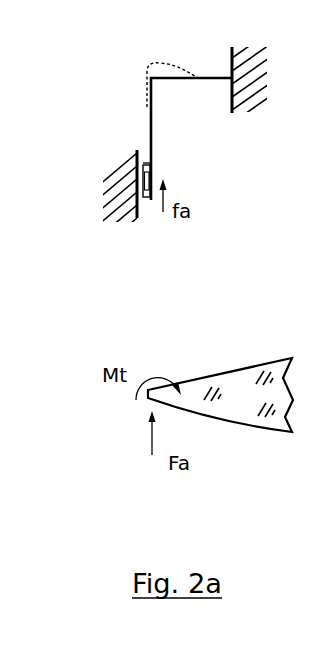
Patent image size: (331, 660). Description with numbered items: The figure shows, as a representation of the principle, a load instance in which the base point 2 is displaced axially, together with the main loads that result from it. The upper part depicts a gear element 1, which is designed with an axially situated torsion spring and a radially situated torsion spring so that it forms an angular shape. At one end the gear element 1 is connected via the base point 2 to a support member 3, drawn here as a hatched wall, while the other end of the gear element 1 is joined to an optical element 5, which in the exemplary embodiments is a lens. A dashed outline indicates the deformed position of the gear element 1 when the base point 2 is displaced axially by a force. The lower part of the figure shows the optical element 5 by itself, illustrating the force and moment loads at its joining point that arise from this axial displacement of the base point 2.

The gear element 1 is at (157, 89).
The base point 2 is at (148, 196).
The support member 3 is at (104, 168).
The optical element 5 is at (265, 70).